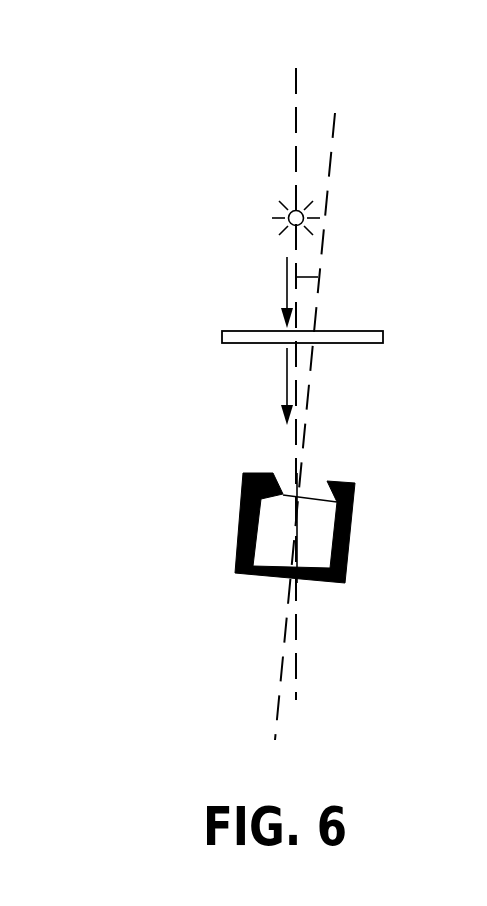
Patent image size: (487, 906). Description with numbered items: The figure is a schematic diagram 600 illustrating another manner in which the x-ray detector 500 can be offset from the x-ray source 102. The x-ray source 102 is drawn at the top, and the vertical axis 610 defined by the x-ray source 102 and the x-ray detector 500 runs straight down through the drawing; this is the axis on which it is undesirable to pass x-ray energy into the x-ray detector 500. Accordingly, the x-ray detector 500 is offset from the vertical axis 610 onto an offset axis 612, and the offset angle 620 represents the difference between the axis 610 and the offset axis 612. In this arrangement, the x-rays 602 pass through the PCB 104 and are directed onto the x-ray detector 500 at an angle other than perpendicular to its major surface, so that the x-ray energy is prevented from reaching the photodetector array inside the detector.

The schematic diagram 600 is at (136, 110).
The vertical axis 610 is at (297, 647).
The offset axis 612 is at (332, 133).
The x-ray source 102 is at (288, 208).
The x-rays 602 is at (287, 288).
The offset angle 620 is at (322, 270).
The PCB 104 is at (222, 336).
The x-ray detector 500 is at (243, 490).